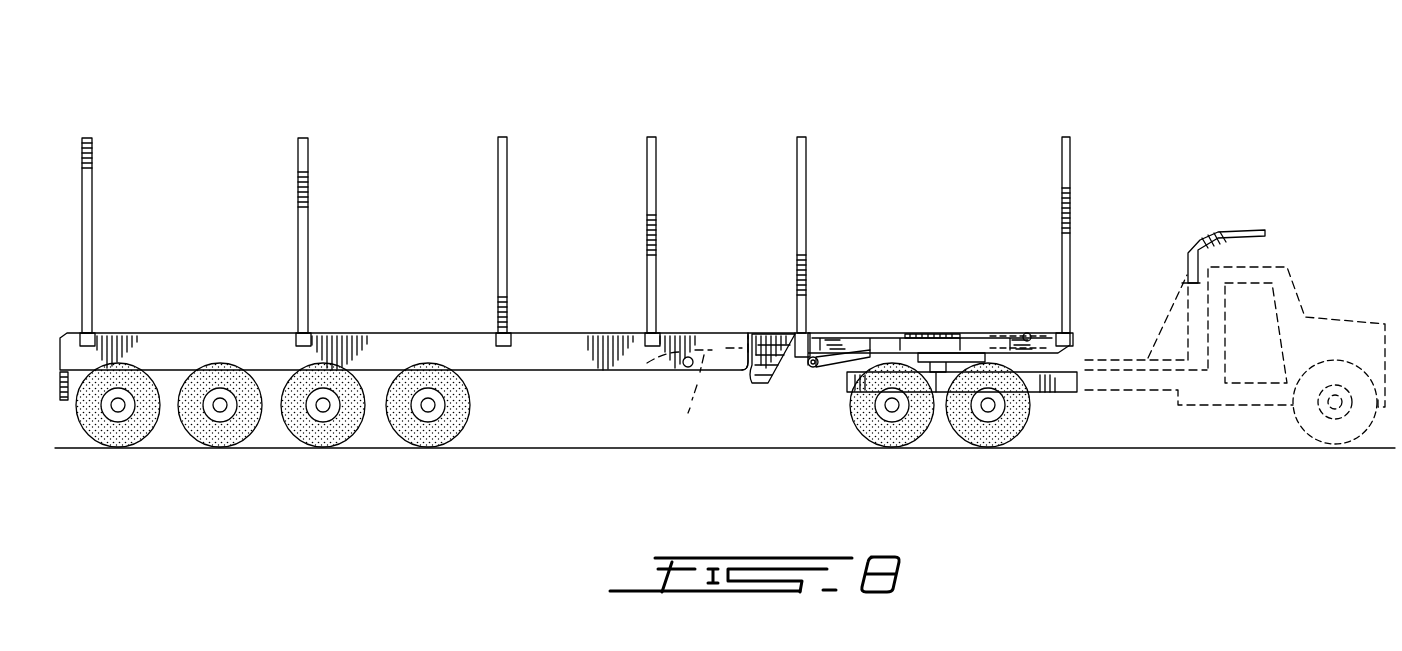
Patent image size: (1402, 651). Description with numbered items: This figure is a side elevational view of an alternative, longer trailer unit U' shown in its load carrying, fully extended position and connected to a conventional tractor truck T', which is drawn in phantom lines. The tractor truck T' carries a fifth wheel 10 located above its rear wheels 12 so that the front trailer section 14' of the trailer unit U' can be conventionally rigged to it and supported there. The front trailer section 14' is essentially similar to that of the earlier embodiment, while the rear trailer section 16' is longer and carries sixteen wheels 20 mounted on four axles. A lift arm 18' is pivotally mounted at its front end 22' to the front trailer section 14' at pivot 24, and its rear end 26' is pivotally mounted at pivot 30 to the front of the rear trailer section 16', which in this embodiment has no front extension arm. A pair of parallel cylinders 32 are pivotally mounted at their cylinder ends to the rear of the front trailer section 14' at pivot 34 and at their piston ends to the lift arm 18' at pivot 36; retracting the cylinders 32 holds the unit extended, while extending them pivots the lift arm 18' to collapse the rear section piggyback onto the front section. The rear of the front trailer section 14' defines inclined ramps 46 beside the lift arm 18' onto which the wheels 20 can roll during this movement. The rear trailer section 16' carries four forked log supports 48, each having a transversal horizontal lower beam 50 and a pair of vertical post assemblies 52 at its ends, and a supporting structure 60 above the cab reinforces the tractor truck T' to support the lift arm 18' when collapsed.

The log support 48 is at (297, 150).
The post assembly 52 is at (298, 186).
The lower beam 50 is at (297, 338).
The rear trailer section 16' is at (427, 329).
The lift arm 18' is at (745, 326).
The wheels 20 is at (403, 422).
The pivot 30 is at (684, 366).
The rear end of lift arm 26' is at (697, 384).
The inclined ramps 46 is at (755, 378).
The cylinders 32 is at (811, 370).
The pivot 34 is at (816, 354).
The front trailer section 14' is at (939, 314).
The pivot 36 is at (948, 333).
The front end of lift arm 22' is at (1021, 304).
The pivot 24 is at (1031, 335).
The rear wheels 12 is at (892, 436).
The fifth wheel 10 is at (940, 394).
The supporting structure 60 is at (1215, 232).
The trailer unit U' is at (773, 66).
The tractor truck T' is at (1239, 321).